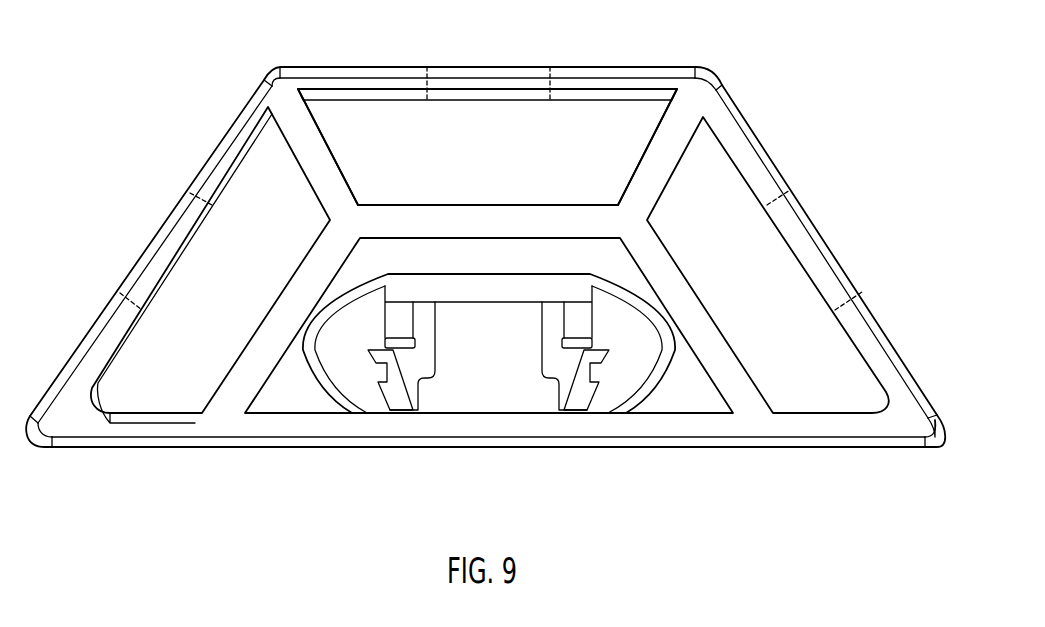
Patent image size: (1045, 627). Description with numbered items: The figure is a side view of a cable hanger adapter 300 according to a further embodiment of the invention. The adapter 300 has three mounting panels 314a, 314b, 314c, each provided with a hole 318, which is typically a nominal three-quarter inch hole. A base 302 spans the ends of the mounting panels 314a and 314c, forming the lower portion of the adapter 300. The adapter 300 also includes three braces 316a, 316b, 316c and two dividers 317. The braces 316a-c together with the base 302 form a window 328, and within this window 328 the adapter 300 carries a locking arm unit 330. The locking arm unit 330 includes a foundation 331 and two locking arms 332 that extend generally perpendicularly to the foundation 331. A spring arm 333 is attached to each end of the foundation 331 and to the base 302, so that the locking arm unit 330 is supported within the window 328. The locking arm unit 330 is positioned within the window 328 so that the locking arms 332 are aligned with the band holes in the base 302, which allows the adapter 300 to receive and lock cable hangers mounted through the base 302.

The cable hanger adapter 300 is at (907, 281).
The base 302 is at (265, 432).
The mounting panel 314a is at (217, 153).
The mounting panel 314b is at (632, 82).
The mounting panel 314c is at (770, 172).
The brace 316a is at (247, 376).
The brace 316b is at (420, 220).
The brace 316c is at (662, 265).
The divider 317 is at (310, 143).
The hole 318 is at (147, 244).
The window 328 is at (685, 397).
The locking arm unit 330 is at (368, 462).
The foundation 331 is at (503, 290).
The locking arm 332 is at (420, 366).
The spring arm 333 is at (332, 390).